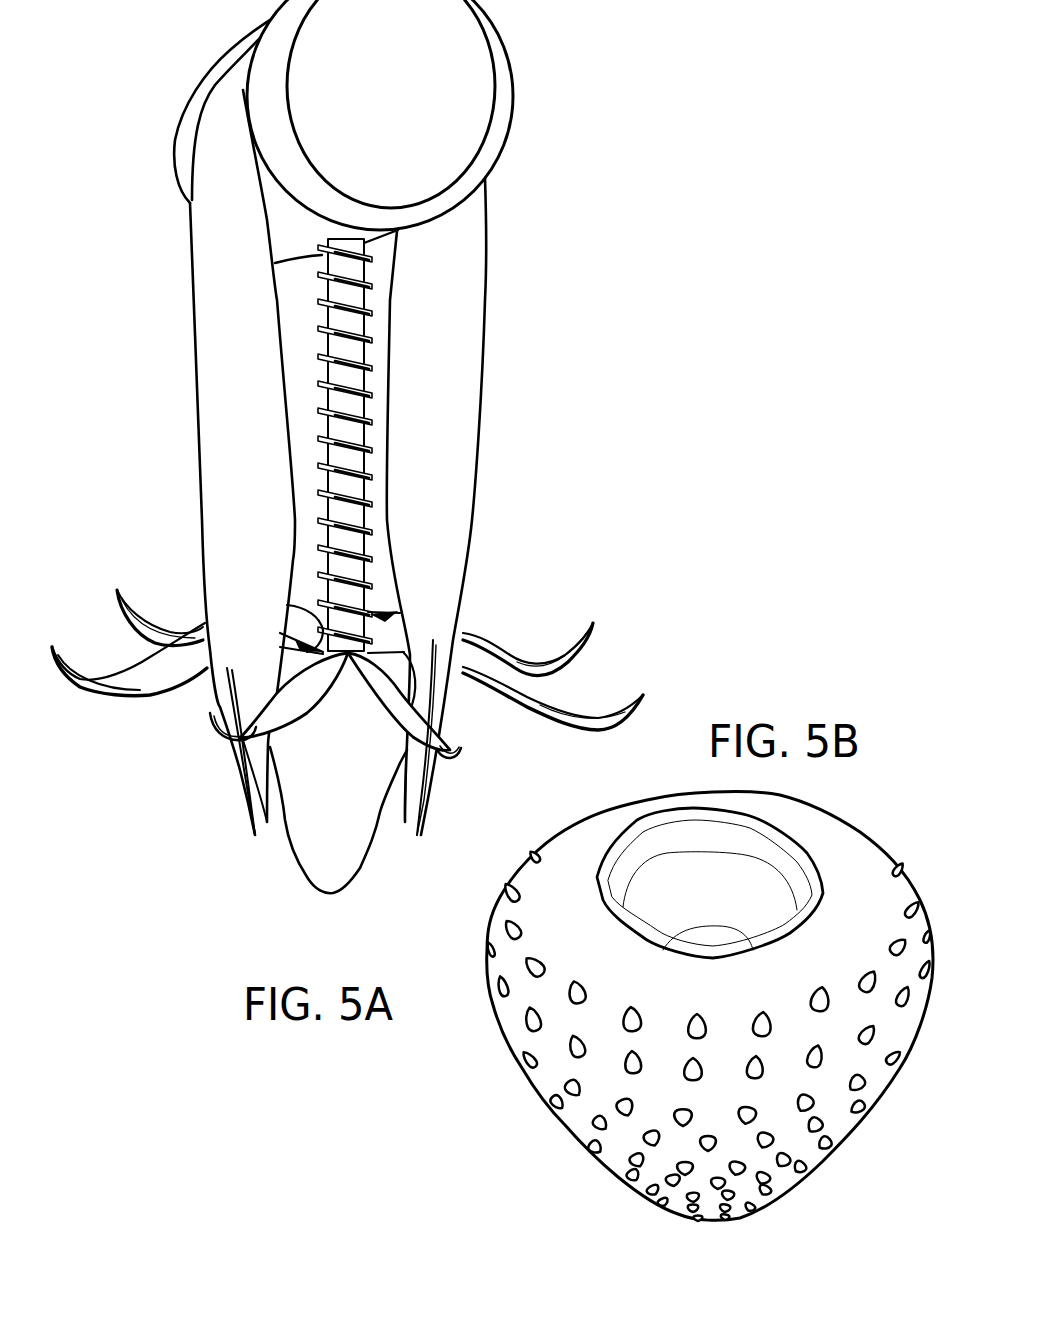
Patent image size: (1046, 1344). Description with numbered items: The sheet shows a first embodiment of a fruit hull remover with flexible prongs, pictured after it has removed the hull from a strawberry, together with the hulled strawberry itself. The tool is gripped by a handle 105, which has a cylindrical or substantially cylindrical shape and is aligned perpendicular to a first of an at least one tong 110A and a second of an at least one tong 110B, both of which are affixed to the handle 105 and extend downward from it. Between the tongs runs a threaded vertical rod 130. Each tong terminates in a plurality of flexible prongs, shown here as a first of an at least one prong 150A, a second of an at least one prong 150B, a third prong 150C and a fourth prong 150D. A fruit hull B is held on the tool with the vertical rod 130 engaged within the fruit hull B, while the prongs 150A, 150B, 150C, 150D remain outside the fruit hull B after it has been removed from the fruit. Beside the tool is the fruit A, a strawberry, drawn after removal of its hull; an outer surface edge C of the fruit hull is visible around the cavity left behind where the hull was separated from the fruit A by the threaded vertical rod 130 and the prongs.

In FIG. 5A, the handle 105 is at (380, 115).
In FIG. 5A, the first of an at least one tong 110A is at (214, 355).
In FIG. 5A, the second of an at least one tong 110B is at (437, 365).
In FIG. 5A, the vertical rod 130 is at (355, 282).
In FIG. 5A, the first of an at least one prong 150A is at (237, 761).
In FIG. 5A, the second of an at least one prong 150B is at (458, 773).
In FIG. 5A, the third blade 150C is at (219, 797).
In FIG. 5A, the fourth blade 150D is at (399, 842).
In FIG. 5B, the fruit A is at (686, 883).
In FIG. 5A, the fruit hull B is at (338, 799).
In FIG. 5B, the outer surface edge C is at (805, 840).